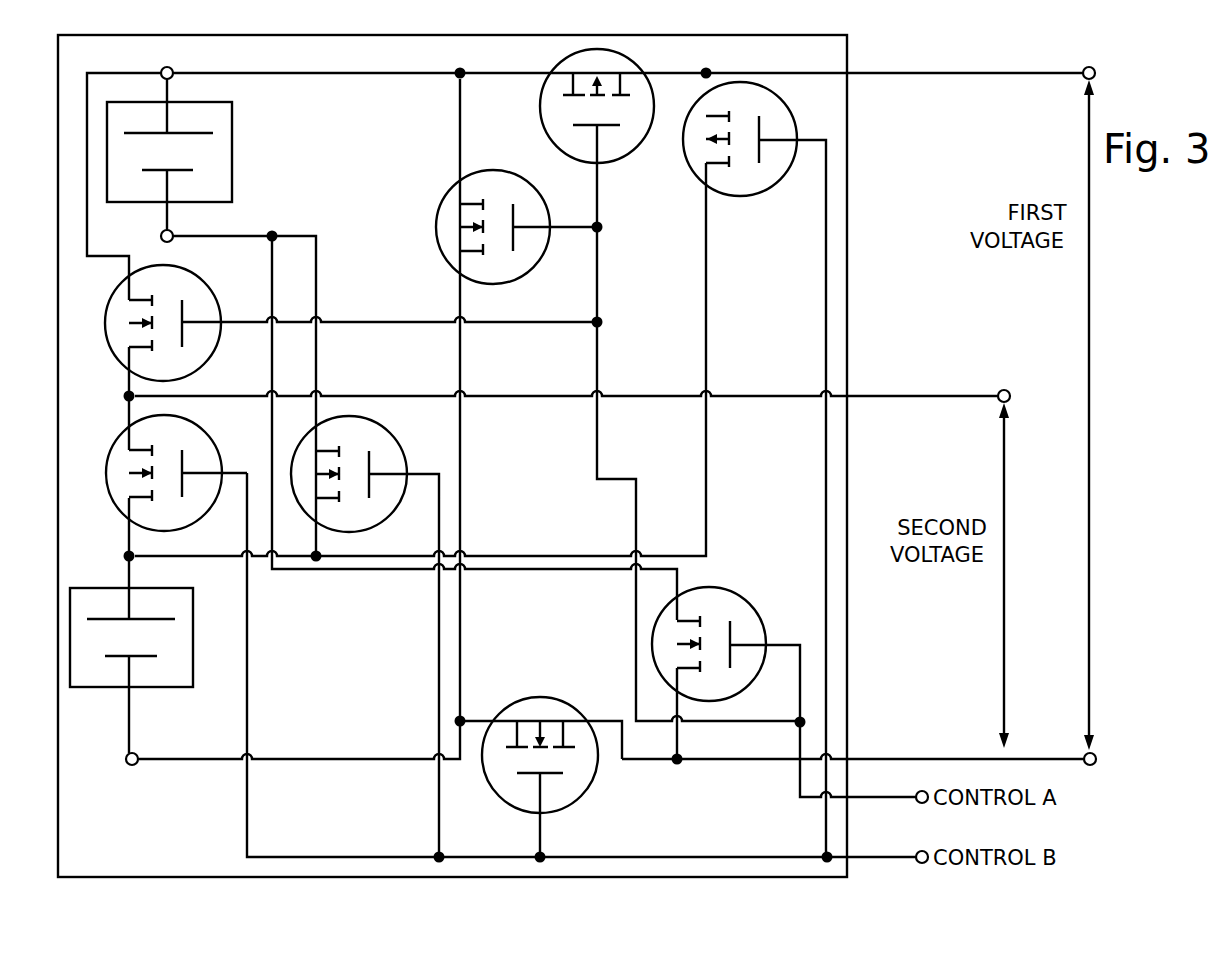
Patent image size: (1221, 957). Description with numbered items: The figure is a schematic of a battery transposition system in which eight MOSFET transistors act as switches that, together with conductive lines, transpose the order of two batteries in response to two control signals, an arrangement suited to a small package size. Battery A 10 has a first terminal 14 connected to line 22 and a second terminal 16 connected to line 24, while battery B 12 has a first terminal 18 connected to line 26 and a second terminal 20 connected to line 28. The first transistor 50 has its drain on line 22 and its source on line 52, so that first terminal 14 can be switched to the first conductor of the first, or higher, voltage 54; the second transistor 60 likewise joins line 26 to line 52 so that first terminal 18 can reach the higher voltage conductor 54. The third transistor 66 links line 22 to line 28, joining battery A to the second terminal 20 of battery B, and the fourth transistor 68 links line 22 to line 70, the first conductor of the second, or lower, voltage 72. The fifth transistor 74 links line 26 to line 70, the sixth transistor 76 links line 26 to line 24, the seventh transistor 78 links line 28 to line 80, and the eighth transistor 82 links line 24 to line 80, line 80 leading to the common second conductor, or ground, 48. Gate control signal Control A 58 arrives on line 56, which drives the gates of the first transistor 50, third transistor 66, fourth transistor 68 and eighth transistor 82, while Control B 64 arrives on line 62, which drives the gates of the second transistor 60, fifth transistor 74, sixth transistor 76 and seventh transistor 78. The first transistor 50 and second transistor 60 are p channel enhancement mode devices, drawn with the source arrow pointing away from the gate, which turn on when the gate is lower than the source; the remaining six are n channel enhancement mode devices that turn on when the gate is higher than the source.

The battery A 10 is at (234, 126).
The battery B 12 is at (175, 587).
The first terminal 14 is at (171, 68).
The second terminal 16 is at (176, 231).
The first terminal 18 is at (124, 558).
The second terminal 20 is at (125, 756).
The line 22 is at (372, 78).
The line 24 is at (277, 232).
The line 26 is at (666, 553).
The line 28 is at (197, 757).
The reference voltage 48 is at (1098, 757).
The first transistor 50 is at (557, 66).
The line 52 is at (733, 69).
The first conductor of the first voltage 54 is at (1094, 66).
The line 56 is at (600, 433).
The Control A 58 is at (925, 792).
The second transistor 60 is at (785, 104).
The line 62 is at (863, 856).
The Control B 64 is at (925, 852).
The third transistor 66 is at (443, 196).
The fourth transistor 68 is at (204, 280).
The line 70 is at (652, 394).
The first conductor of the second voltage 72 is at (1007, 389).
The fifth transistor 74 is at (204, 430).
The sixth transistor 76 is at (390, 430).
The seventh transistor 78 is at (540, 697).
The line 80 is at (715, 757).
The eighth transistor 82 is at (731, 586).